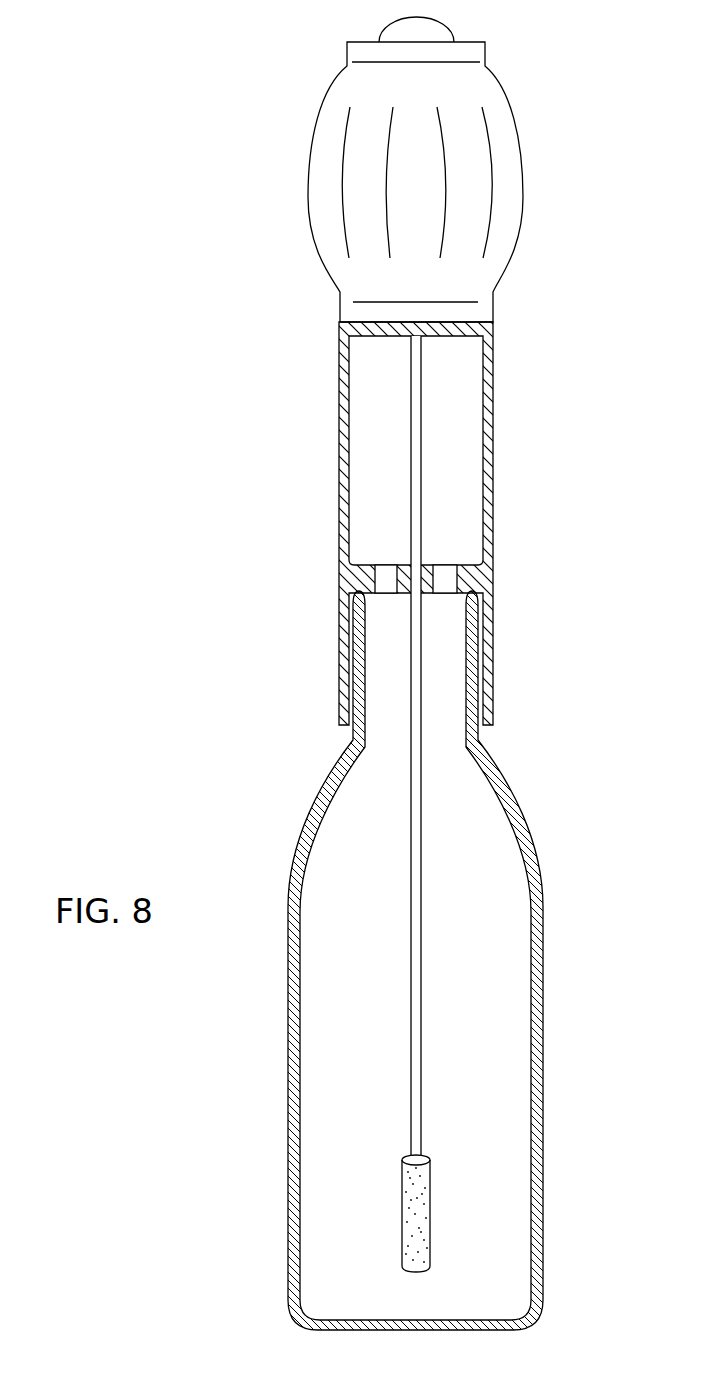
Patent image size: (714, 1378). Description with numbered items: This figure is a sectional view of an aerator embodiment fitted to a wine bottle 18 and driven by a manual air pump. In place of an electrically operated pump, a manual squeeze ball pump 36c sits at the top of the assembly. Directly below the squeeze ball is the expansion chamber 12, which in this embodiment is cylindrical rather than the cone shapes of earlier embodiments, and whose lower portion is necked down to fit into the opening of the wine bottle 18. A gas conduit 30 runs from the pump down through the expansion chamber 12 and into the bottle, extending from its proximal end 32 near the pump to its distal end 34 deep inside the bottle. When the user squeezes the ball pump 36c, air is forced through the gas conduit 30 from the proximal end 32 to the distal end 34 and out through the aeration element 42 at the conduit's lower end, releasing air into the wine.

The manual squeeze ball pump 36c is at (469, 169).
The expansion chamber 12 is at (457, 523).
The proximal end 32 is at (490, 747).
The gas conduit 30 is at (497, 846).
The wine bottle 18 is at (454, 960).
The distal end 34 is at (520, 1127).
The aeration element 42 is at (513, 1213).